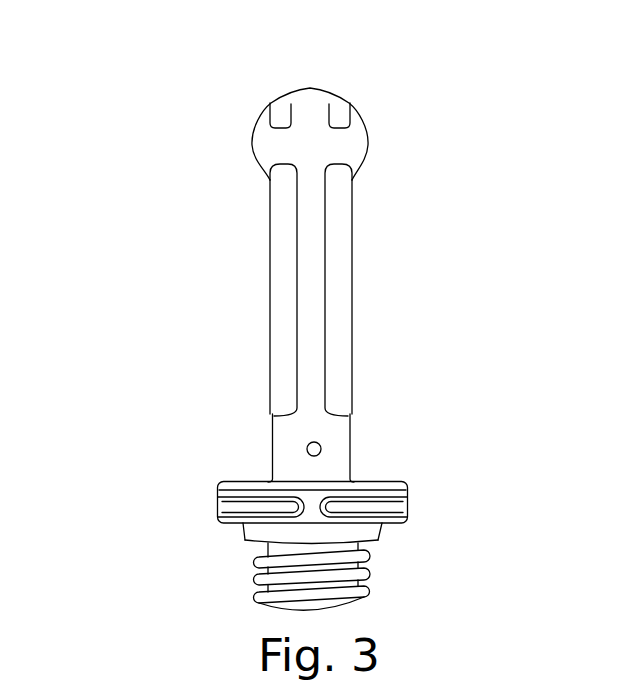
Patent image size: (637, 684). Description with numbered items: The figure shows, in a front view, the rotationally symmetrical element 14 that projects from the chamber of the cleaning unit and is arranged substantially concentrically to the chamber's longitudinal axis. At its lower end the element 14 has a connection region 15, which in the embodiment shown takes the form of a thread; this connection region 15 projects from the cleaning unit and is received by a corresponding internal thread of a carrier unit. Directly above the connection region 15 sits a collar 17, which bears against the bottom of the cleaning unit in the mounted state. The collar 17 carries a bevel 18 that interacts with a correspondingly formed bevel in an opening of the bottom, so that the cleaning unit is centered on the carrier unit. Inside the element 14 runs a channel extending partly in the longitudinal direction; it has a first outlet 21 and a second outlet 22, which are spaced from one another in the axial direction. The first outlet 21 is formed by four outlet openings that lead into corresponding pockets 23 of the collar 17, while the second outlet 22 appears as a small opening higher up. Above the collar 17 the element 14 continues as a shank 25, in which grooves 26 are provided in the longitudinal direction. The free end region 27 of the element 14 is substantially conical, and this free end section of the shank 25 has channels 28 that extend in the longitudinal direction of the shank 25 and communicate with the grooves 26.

The element 14 is at (420, 302).
The connection region 15 is at (260, 582).
The collar 17 is at (216, 488).
The bevel 18 is at (362, 532).
The first outlet 21 is at (407, 524).
The second outlet 22 is at (322, 447).
The pockets 23 is at (218, 500).
The shank 25 is at (270, 362).
The grooves 26 is at (278, 220).
The free end region 27 is at (367, 146).
The channels 28 is at (283, 117).